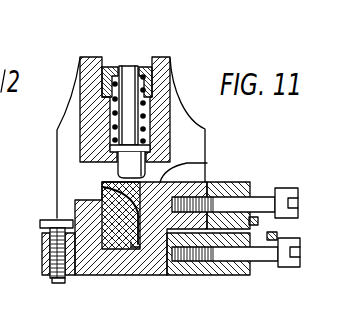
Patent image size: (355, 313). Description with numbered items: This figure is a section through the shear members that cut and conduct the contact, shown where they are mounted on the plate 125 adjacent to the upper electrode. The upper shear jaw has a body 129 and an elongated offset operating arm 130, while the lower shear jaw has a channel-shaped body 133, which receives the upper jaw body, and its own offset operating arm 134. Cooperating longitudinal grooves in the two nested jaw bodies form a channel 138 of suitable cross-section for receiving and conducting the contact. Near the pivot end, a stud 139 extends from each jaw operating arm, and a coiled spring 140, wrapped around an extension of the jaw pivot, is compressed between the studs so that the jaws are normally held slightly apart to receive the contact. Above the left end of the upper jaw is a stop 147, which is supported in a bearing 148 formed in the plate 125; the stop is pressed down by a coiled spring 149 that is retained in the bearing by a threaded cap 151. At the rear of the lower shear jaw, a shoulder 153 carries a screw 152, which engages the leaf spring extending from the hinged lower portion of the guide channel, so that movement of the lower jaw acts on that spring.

The plate 125 is at (65, 132).
The threaded cap 151 is at (142, 66).
The coiled spring 149 is at (143, 122).
The bearing 148 is at (160, 133).
The stop 147 is at (120, 165).
The body 129 is at (207, 163).
The channel 138 is at (107, 193).
The channel-shaped body 133 is at (97, 267).
The elongated offset operating arm 130 is at (242, 179).
The offset operating arm 134 is at (227, 275).
The stud 139 is at (287, 188).
The coiled spring 140 is at (263, 227).
The screw 152 is at (60, 257).
The shoulder 153 is at (42, 265).